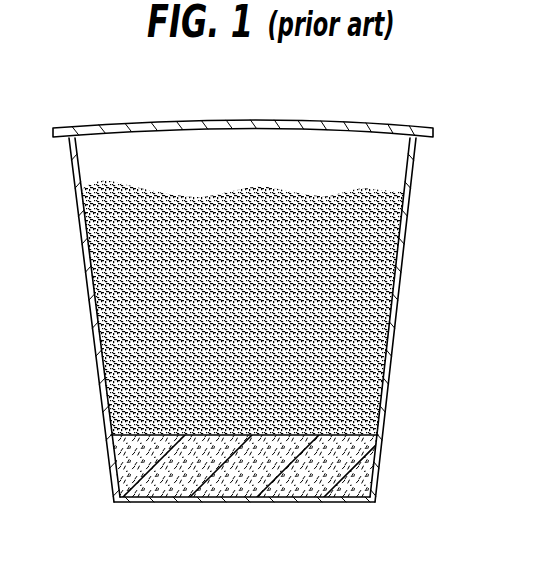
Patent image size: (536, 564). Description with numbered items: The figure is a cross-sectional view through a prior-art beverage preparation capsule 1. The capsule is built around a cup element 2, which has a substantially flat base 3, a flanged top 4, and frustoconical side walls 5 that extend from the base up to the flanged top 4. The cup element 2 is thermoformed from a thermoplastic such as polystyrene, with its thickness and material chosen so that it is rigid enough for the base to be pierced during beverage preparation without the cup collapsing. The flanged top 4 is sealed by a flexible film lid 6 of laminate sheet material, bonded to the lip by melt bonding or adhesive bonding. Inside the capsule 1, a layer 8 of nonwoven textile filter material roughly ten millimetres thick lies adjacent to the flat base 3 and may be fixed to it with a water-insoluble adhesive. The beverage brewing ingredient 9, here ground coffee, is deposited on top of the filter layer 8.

The beverage preparation capsule 1 is at (255, 287).
The cup element 2 is at (278, 320).
The base 3 is at (127, 501).
The flanged top 4 is at (271, 120).
The frustoconical side walls 5 is at (397, 292).
The flexible film lid 6 is at (92, 127).
The layer of nonwoven textile filter material 8 is at (366, 484).
The beverage brewing ingredient 9 is at (108, 282).